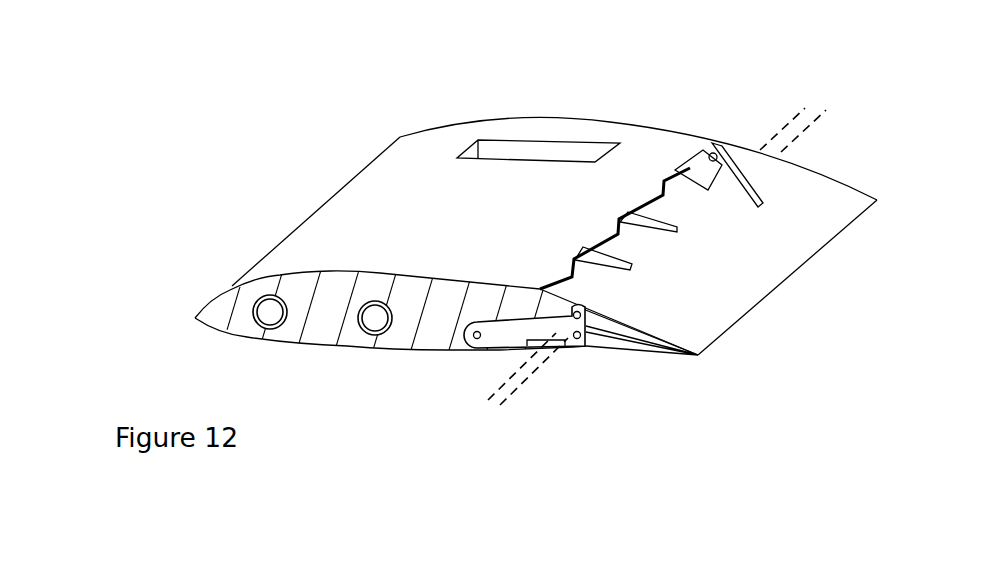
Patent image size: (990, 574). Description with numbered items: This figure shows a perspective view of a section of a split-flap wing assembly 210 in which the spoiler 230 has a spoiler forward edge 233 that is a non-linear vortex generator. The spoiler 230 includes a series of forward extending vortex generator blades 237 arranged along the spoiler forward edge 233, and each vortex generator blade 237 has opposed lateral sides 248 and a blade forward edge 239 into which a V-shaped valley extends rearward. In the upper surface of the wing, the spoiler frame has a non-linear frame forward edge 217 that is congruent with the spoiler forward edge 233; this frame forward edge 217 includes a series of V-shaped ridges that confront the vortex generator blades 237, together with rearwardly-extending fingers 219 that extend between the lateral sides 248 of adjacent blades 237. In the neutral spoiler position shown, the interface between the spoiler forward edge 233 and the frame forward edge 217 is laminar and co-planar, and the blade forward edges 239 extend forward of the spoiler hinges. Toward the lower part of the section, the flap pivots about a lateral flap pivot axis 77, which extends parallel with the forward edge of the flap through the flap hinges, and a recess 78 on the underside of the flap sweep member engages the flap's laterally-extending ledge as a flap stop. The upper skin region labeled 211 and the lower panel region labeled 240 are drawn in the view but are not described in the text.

The split-flap wing assembly 210 is at (853, 95).
The upper skin 211 is at (390, 188).
The frame forward edge 217 is at (643, 197).
The rearwardly-extending fingers 219 is at (685, 175).
The vortex generator blade 237 is at (673, 207).
The blade forward edge 239 is at (617, 230).
The spoiler forward edge 233 is at (563, 248).
The lateral sides 248 is at (645, 222).
The spoiler 230 is at (802, 248).
The lower panel 240 is at (600, 357).
The recess 78 is at (510, 388).
The flap pivot axis 77 is at (530, 372).